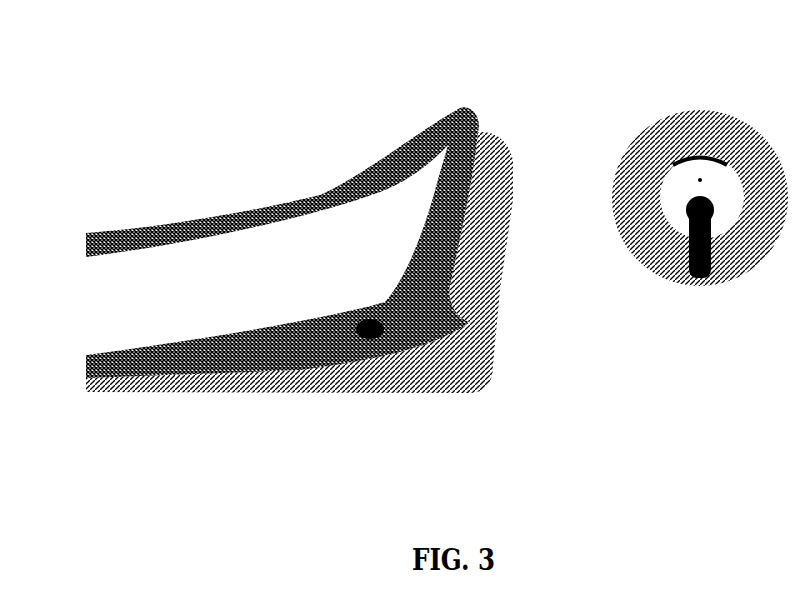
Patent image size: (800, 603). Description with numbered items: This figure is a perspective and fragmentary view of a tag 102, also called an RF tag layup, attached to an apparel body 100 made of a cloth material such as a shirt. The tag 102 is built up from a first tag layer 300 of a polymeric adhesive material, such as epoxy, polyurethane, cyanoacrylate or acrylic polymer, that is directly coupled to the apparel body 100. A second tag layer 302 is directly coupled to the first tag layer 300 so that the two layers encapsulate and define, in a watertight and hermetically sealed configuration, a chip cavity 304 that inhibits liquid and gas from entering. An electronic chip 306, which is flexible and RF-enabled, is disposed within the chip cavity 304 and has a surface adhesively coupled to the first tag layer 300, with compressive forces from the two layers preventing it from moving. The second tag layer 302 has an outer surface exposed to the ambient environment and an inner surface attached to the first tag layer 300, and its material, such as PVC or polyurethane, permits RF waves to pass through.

The apparel body 100 is at (232, 274).
The tag 102 is at (363, 108).
The first tag layer 300 is at (321, 244).
The second tag layer 302 is at (403, 203).
The chip cavity 304 is at (438, 348).
The electronic chip 306 is at (425, 307).